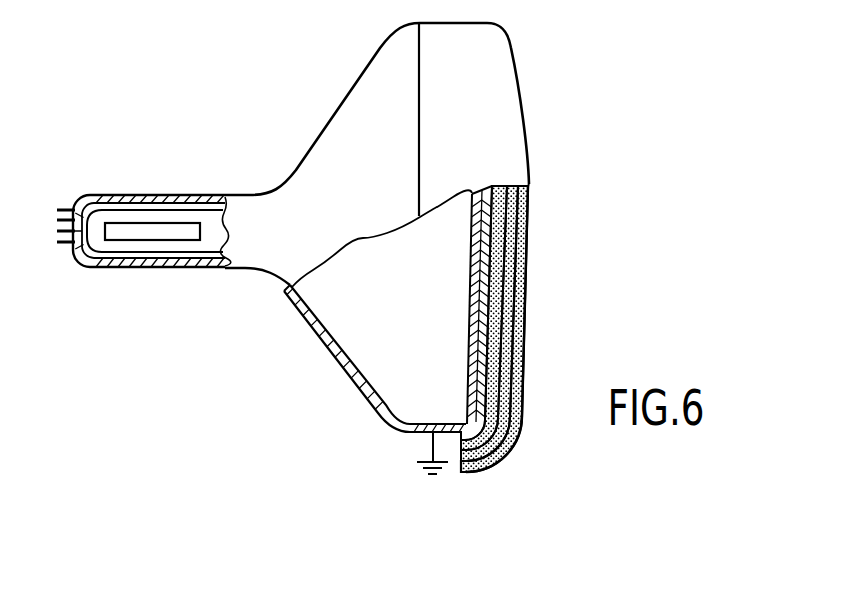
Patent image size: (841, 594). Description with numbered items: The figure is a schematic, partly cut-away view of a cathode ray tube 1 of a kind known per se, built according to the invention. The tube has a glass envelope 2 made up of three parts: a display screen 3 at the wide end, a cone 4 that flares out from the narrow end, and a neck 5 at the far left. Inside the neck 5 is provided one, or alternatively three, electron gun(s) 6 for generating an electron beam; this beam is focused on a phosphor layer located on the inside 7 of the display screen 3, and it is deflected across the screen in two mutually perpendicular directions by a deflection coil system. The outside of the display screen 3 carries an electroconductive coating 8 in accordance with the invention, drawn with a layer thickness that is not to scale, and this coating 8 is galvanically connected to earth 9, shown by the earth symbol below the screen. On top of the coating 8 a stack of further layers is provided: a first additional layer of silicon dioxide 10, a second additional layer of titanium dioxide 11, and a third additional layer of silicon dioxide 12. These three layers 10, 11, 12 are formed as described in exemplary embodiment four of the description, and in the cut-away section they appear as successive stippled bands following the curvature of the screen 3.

The cathode ray tube 1 is at (260, 402).
The glass envelope 2 is at (275, 285).
The display screen 3 is at (502, 68).
The cone 4 is at (335, 120).
The neck 5 is at (102, 195).
The electron gun 6 is at (120, 242).
The inside of the display screen 7 is at (470, 290).
The electroconductive coating 8 is at (483, 222).
The earth 9 is at (418, 467).
The first additional layer of silicon dioxide 10 is at (500, 260).
The second additional layer of titanium dioxide 11 is at (515, 305).
The third additional layer of silicon dioxide 12 is at (525, 347).